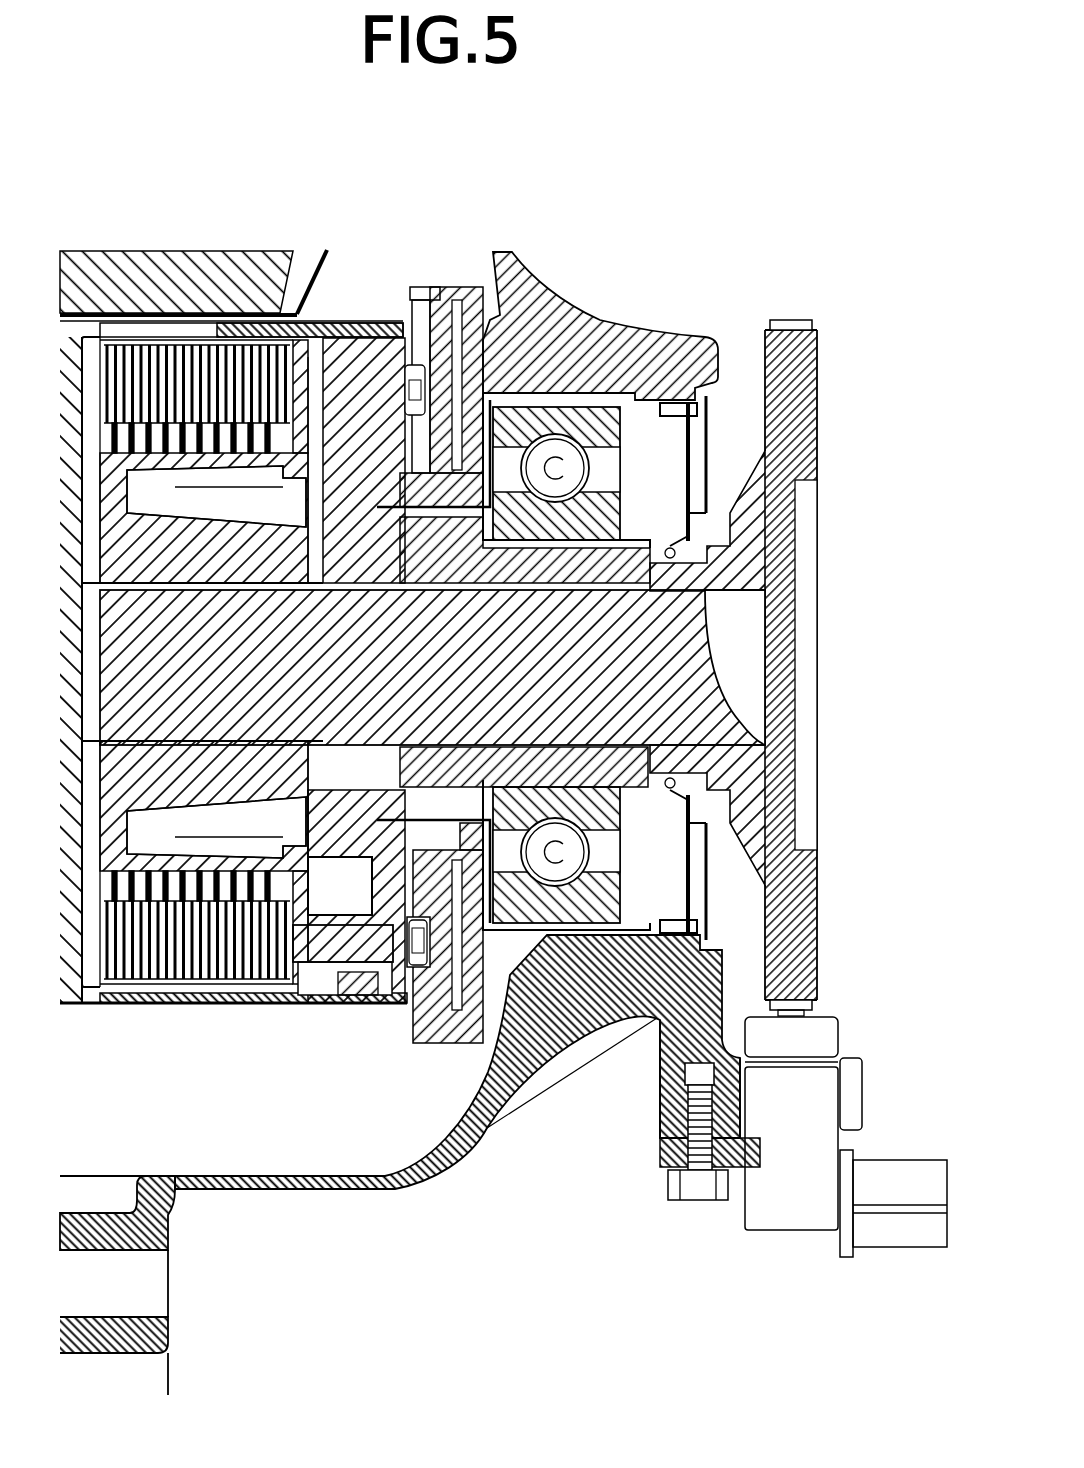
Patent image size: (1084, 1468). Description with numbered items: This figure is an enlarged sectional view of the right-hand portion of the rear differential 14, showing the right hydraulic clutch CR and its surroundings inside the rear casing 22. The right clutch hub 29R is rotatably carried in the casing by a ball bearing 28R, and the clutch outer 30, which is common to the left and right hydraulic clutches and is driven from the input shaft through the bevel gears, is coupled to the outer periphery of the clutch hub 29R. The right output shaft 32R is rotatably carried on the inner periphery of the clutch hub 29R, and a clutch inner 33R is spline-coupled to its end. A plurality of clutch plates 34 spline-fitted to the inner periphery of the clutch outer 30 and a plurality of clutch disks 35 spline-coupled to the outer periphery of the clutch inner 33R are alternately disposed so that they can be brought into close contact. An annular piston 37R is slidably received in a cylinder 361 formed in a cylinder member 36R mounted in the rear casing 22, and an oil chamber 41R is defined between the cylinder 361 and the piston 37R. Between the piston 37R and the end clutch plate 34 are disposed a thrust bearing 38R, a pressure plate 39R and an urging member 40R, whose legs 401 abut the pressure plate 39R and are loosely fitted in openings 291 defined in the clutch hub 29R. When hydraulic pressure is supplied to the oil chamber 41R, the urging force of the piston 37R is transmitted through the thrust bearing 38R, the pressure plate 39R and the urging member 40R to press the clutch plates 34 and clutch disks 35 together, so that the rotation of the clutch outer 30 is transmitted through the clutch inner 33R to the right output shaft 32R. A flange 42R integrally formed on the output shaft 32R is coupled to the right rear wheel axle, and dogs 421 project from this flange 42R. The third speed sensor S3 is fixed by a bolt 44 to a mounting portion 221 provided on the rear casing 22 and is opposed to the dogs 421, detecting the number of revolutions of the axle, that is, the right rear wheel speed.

The rear differential 14 is at (518, 232).
The rear casing 22 is at (392, 1190).
The mounting portion 221 is at (660, 1105).
The ball bearing 28R is at (580, 470).
The right clutch hub 29R is at (492, 590).
The openings 291 is at (355, 958).
The clutch outer 30 is at (346, 323).
The right output shaft 32R is at (445, 681).
The clutch inner 33R is at (228, 592).
The clutch plates 34 is at (240, 1007).
The clutch disks 35 is at (247, 870).
The cylinder member 36R is at (450, 1053).
The cylinder 361 is at (445, 840).
The annular piston 37R is at (440, 283).
The thrust bearing 38R is at (312, 513).
The pressure plate 39R is at (393, 400).
The urging member 40R is at (323, 1003).
The legs 401 is at (340, 925).
The oil chamber 41R is at (707, 336).
The flange 42R is at (818, 452).
The dogs 421 is at (792, 320).
The bolt 44 is at (700, 1185).
The right hydraulic clutch CR is at (165, 305).
The third speed sensor S3 is at (797, 1240).